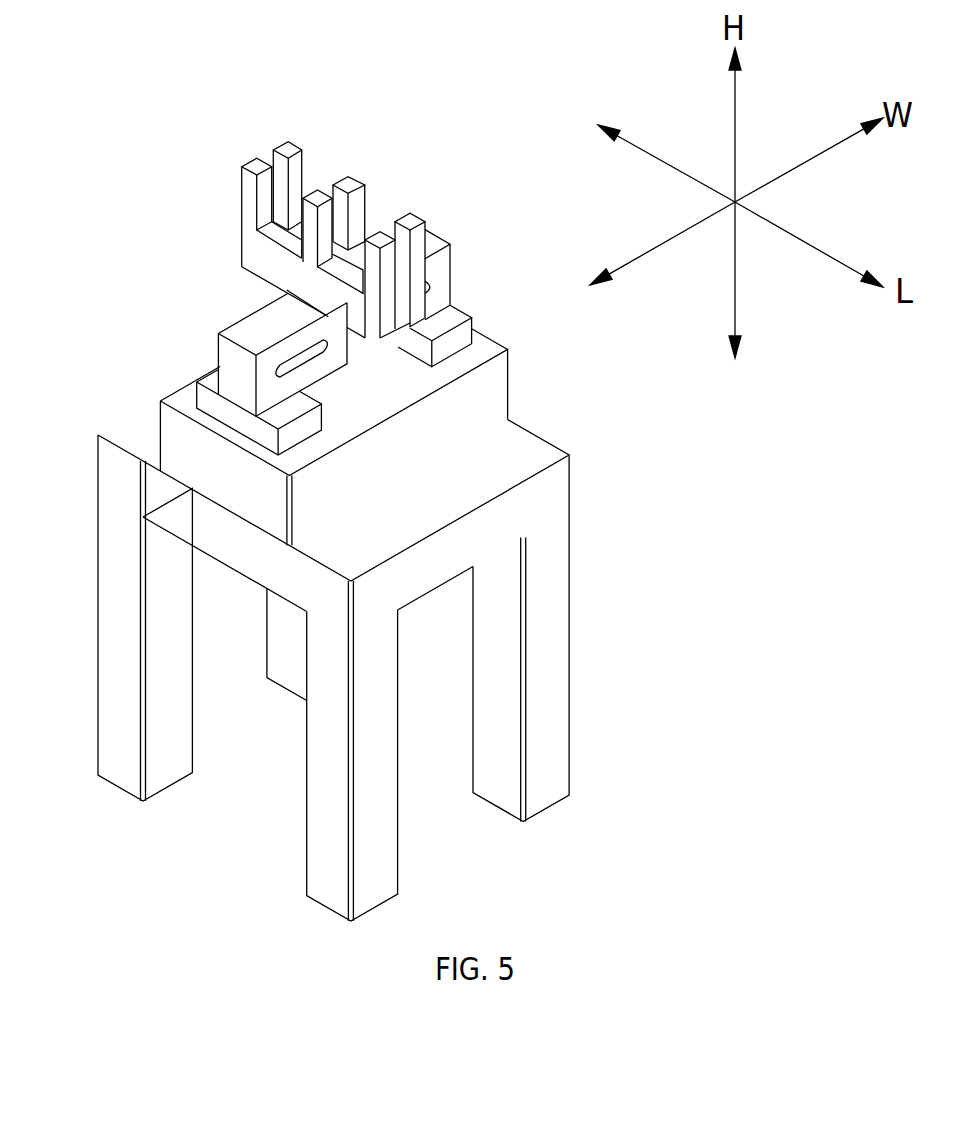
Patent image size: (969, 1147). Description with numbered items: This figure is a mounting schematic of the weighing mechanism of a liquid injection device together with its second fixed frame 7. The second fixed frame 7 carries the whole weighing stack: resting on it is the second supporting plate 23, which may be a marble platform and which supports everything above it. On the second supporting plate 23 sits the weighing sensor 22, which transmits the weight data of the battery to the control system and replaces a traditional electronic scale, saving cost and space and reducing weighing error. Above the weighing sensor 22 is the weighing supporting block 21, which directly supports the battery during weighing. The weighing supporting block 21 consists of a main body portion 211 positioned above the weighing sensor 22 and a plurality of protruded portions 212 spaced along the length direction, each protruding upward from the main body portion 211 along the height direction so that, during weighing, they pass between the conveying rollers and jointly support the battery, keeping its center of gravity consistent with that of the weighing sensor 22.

The second fixed frame 7 is at (540, 625).
The weighing supporting block 21 is at (279, 210).
The main body portion 211 is at (273, 263).
The protruded portions 212 is at (302, 218).
The weighing sensor 22 is at (235, 368).
The second supporting plate 23 is at (480, 403).